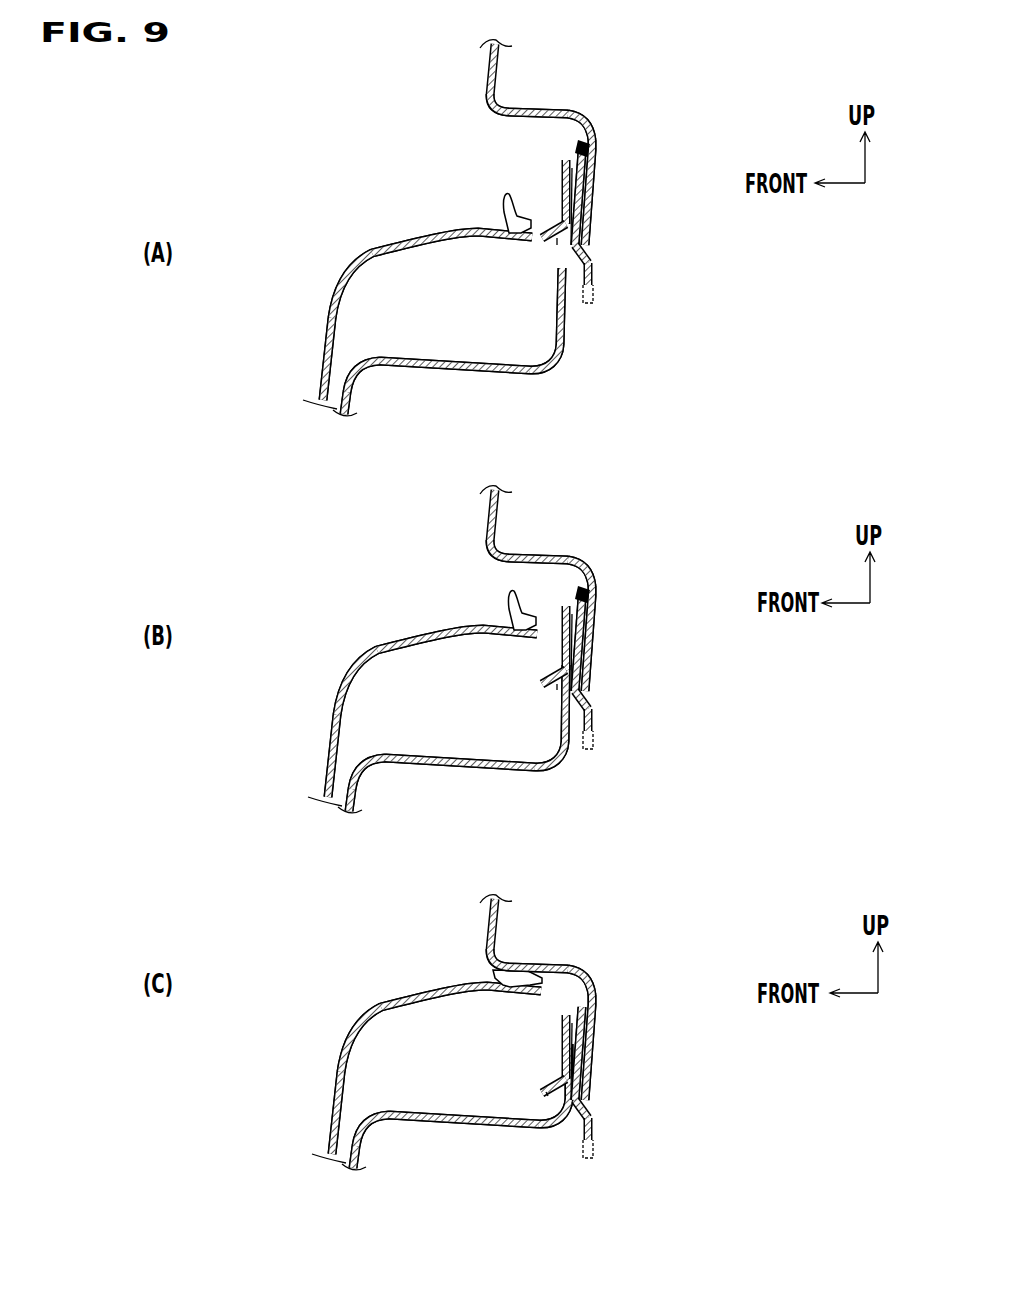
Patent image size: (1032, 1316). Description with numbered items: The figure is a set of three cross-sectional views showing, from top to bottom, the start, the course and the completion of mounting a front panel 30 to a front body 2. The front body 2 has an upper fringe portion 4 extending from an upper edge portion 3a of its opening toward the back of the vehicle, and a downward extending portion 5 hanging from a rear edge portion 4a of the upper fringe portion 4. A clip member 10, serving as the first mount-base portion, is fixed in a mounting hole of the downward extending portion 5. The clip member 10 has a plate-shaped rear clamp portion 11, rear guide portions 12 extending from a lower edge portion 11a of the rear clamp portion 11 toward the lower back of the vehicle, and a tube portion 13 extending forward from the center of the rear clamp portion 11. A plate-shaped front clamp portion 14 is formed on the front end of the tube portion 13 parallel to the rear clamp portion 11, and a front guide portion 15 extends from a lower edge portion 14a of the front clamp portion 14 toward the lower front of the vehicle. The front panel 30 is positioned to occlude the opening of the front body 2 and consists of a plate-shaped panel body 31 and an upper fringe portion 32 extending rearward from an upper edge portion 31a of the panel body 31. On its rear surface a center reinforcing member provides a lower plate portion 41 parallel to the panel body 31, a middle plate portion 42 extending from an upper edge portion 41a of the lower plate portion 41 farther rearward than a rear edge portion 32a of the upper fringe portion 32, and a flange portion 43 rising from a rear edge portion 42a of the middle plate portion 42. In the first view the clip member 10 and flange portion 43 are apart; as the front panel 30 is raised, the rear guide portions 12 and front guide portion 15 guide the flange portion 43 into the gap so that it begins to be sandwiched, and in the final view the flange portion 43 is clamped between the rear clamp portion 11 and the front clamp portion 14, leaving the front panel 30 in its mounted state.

The front body 2 is at (480, 72).
The upper edge portion of the opening 3a is at (502, 94).
The upper fringe portion 4 is at (558, 110).
The rear edge portion of the upper fringe portion 4a is at (595, 130).
The downward extending portion 5 is at (597, 182).
The clip member 10 is at (598, 150).
The rear clamp portion 11 is at (584, 202).
The lower edge portion of the rear clamp portion 11a is at (588, 242).
The rear guide portion 12 is at (595, 277).
The tube portion 13 is at (590, 152).
The front clamp portion 14 is at (561, 182).
The lower edge portion of the front clamp portion 14a is at (550, 224).
The front guide portion 15 is at (557, 240).
The front panel 30 is at (369, 244).
The panel body 31 is at (322, 351).
The upper edge portion of the panel body 31a is at (343, 278).
The upper fringe portion 32 is at (423, 245).
The rear edge portion of the upper fringe portion 32a is at (527, 241).
The lower plate portion 41 is at (353, 416).
The upper edge portion of the lower plate portion 41a is at (362, 372).
The middle plate portion 42 is at (473, 374).
The rear edge portion of the middle plate portion 42a is at (553, 368).
The flange portion 43 is at (565, 322).